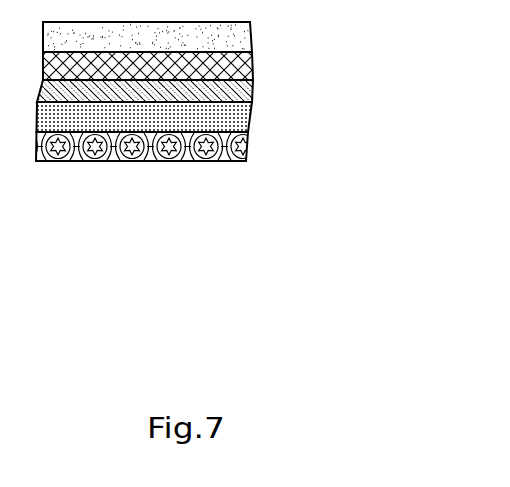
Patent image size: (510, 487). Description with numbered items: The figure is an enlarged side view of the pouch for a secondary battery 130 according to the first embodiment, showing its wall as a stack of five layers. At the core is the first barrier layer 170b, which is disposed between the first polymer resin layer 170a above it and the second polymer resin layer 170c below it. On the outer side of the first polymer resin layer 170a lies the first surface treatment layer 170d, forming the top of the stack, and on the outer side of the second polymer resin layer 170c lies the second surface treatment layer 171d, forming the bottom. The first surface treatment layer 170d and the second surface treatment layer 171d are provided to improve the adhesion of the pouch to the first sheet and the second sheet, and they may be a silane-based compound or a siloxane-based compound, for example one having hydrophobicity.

The pouch for a secondary battery 130 is at (201, 91).
The first surface treatment layer 170d is at (251, 33).
The first polymer resin layer 170a is at (253, 62).
The first barrier layer 170b is at (253, 90).
The second polymer resin layer 170c is at (252, 118).
The second surface treatment layer 171d is at (172, 146).